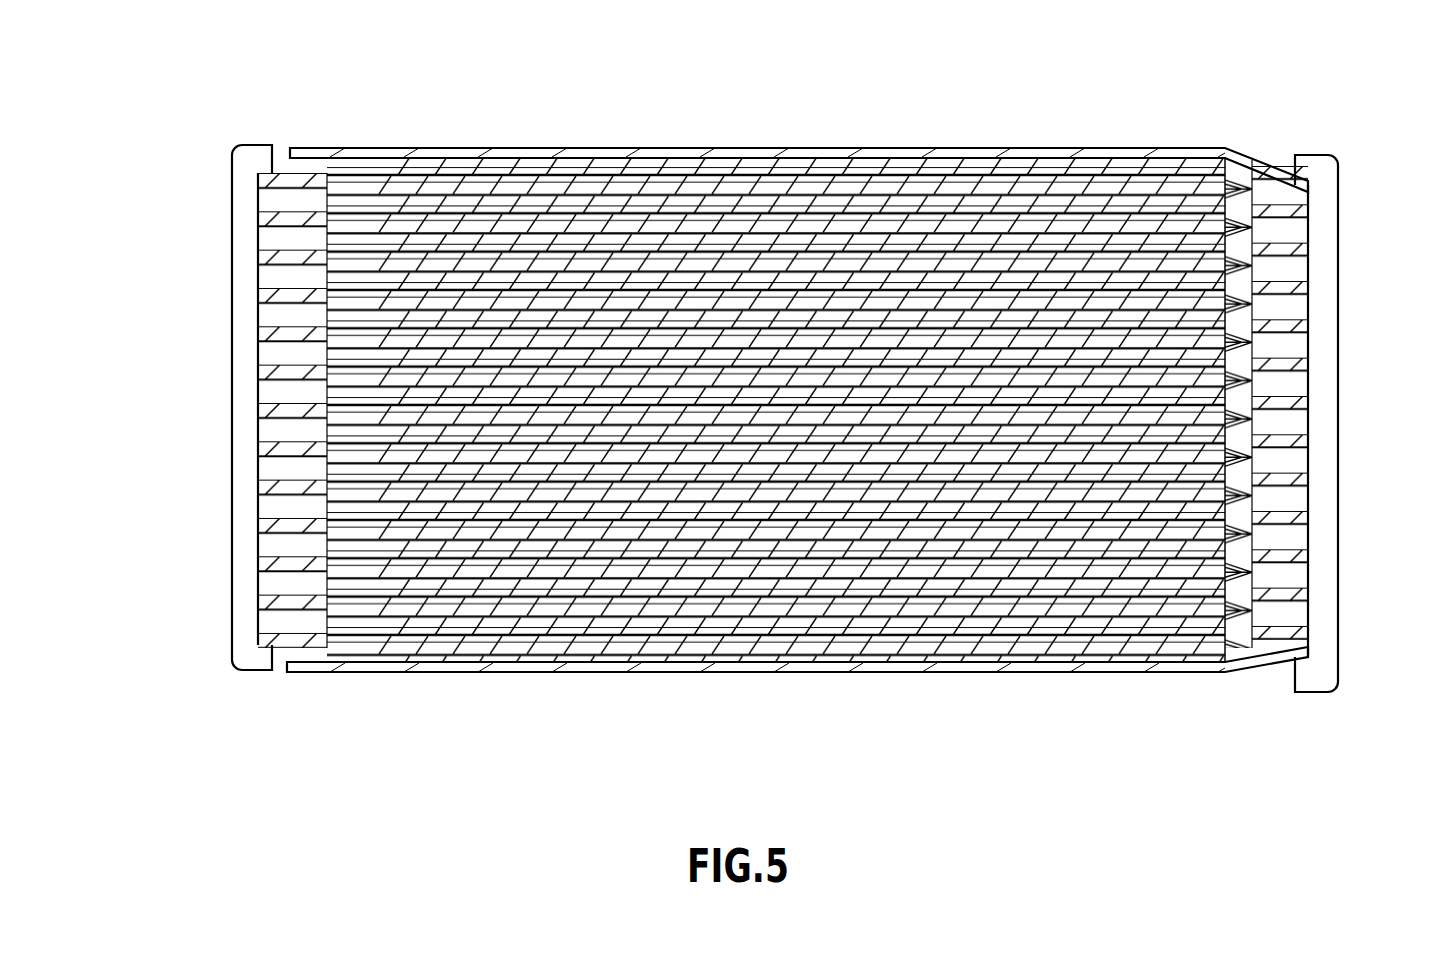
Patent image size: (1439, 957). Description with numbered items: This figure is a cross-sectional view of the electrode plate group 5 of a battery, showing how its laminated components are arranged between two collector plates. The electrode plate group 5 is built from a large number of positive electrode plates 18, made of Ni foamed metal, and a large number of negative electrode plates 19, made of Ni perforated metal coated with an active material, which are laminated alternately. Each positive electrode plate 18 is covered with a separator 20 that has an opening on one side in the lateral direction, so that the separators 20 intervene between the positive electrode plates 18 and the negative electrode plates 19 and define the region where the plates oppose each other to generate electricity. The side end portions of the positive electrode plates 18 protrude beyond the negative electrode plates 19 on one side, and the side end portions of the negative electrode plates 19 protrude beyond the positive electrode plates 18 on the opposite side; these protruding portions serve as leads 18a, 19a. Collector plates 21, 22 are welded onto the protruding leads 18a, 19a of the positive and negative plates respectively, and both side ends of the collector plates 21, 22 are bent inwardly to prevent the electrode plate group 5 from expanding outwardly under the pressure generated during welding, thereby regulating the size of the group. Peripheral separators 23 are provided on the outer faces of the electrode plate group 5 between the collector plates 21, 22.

The electrode plate group 5 is at (353, 122).
The positive electrode plates 18 is at (720, 376).
The leads 18a is at (260, 290).
The negative electrode plates 19 is at (904, 367).
The leads 19a is at (1310, 290).
The separators 20 is at (1021, 197).
The collector plate 21 is at (240, 413).
The collector plate 22 is at (1322, 413).
The peripheral separators 23 is at (745, 150).